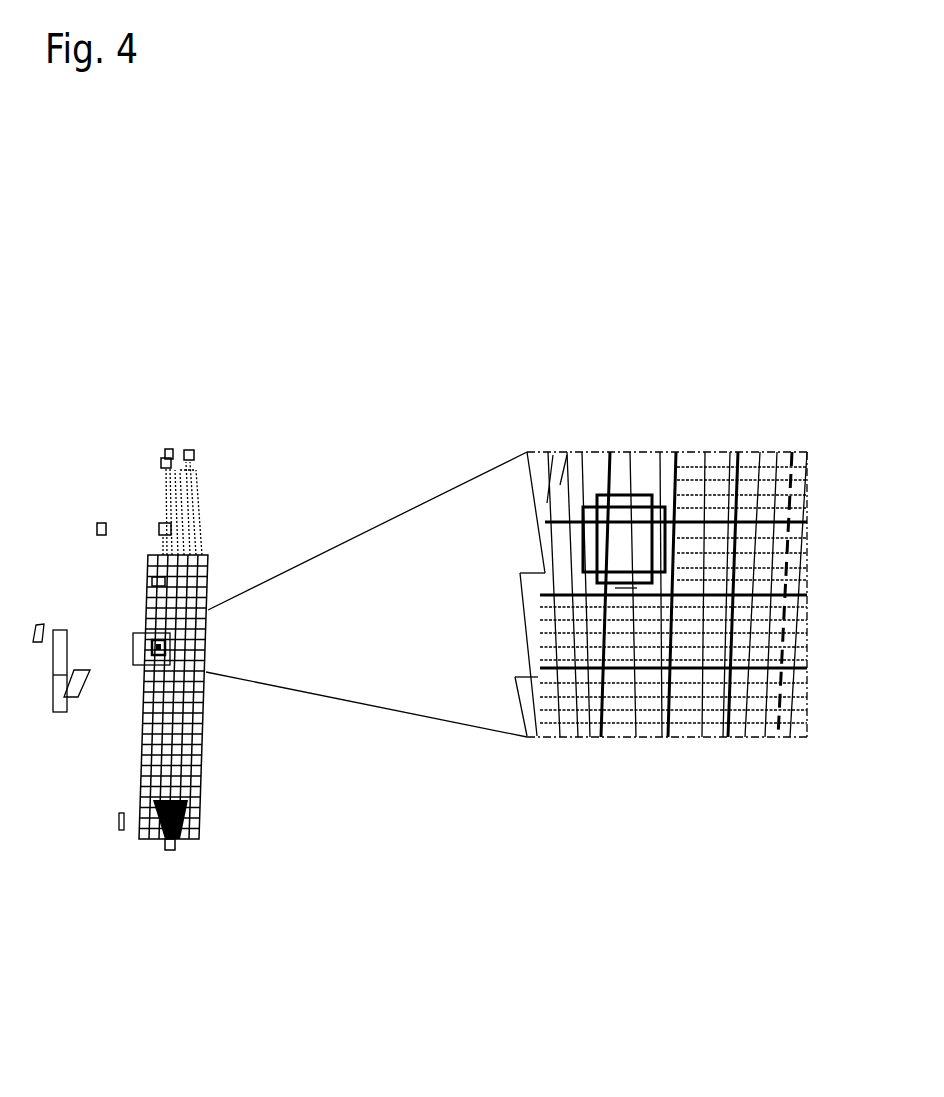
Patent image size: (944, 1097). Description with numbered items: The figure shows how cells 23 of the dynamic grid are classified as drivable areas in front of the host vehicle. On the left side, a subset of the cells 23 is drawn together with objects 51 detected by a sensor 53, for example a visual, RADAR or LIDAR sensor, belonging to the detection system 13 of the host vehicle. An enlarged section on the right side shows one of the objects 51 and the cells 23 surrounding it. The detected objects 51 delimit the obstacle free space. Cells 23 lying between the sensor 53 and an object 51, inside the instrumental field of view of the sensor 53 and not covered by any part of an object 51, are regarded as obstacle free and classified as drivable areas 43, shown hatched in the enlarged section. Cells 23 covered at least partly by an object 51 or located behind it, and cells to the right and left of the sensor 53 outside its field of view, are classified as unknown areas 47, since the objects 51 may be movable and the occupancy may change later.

The detection system 13 is at (199, 871).
The cells 23 is at (202, 733).
The drivable areas 43 is at (140, 717).
The unknown areas 47 is at (203, 618).
The objects 51 is at (196, 450).
The sensor 53 is at (163, 847).